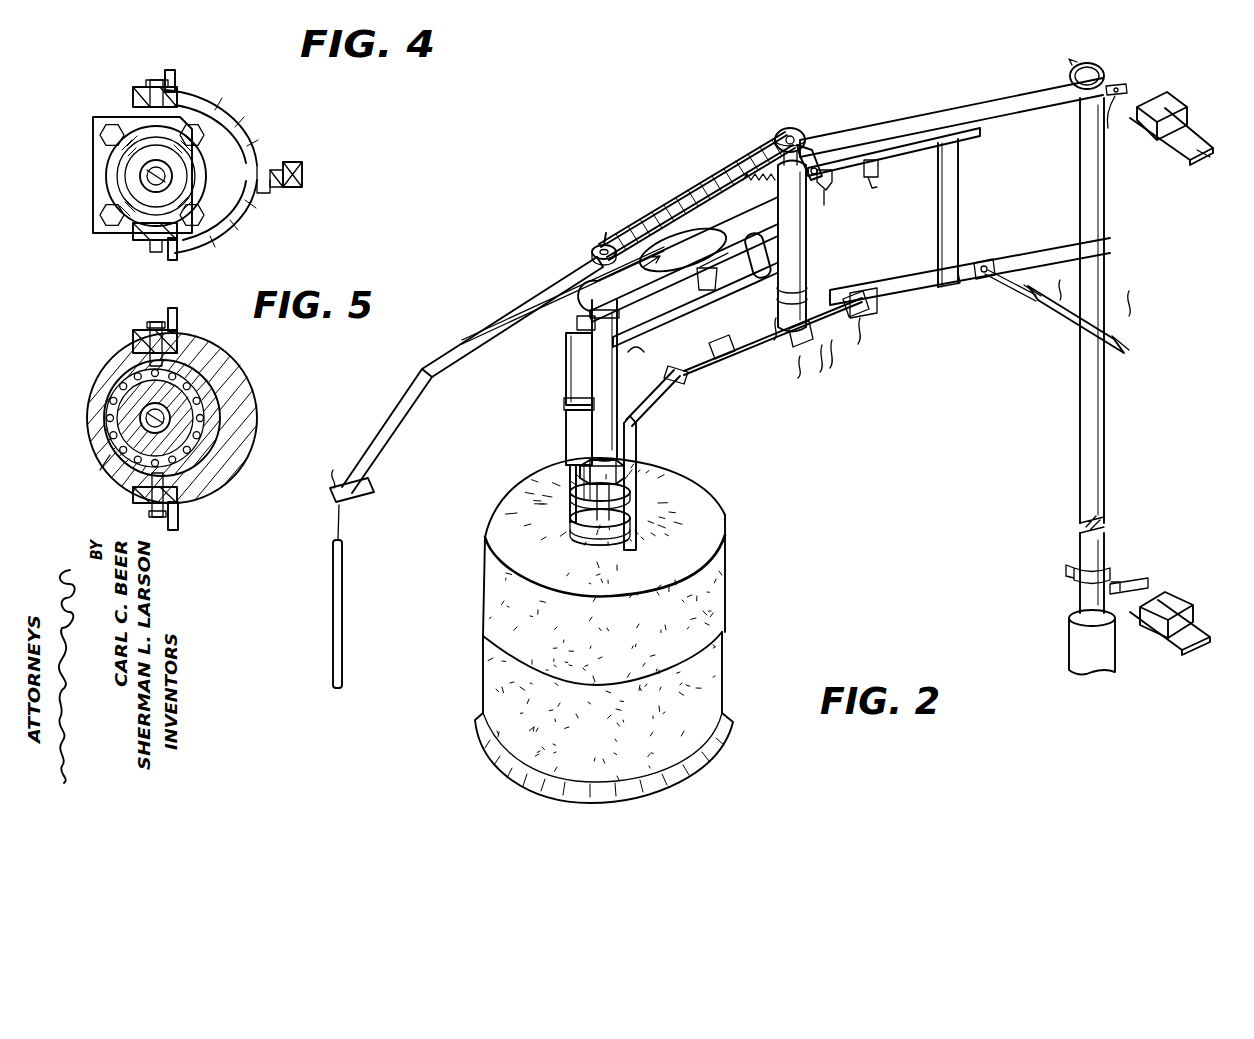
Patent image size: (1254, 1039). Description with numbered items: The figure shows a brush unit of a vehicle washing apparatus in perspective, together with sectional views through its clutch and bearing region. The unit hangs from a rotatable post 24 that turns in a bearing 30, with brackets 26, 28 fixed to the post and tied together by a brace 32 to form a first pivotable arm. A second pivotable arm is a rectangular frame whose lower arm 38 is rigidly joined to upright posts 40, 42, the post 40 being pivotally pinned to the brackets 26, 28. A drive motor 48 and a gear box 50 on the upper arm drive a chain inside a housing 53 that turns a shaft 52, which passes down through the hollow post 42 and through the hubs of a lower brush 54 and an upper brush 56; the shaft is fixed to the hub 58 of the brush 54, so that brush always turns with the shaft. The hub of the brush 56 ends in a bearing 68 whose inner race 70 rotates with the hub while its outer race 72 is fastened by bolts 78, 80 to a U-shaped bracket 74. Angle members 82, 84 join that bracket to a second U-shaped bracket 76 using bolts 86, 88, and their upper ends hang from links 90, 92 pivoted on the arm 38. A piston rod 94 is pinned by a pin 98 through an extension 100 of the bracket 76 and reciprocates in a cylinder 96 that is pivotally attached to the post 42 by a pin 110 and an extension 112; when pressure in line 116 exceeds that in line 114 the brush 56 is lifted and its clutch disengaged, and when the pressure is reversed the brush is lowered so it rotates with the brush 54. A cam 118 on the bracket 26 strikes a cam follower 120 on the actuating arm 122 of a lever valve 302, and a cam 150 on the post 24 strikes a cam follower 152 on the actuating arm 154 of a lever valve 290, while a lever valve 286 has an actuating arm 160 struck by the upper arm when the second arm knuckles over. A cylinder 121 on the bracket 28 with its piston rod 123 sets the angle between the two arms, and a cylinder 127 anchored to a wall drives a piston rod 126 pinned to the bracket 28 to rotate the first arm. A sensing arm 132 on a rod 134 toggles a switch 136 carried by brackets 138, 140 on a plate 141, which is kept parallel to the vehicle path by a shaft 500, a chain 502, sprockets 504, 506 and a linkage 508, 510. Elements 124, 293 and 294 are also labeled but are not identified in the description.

In FIG. 2, the rotatable post 24 is at (1106, 451).
In FIG. 2, the bracket 26 is at (938, 116).
In FIG. 2, the bracket 28 is at (918, 301).
In FIG. 2, the bearing 30 is at (1071, 634).
In FIG. 2, the brace 32 is at (958, 220).
In FIG. 2, the arm 38 is at (680, 372).
In FIG. 2, the upright post 40 is at (808, 242).
In FIG. 4, the upright post 42 is at (128, 182).
In FIG. 2, the upright post 42 is at (640, 325).
In FIG. 2, the drive motor 48 is at (750, 241).
In FIG. 2, the gear box 50 is at (706, 288).
In FIG. 4, the shaft 52 is at (142, 172).
In FIG. 5, the shaft 52 is at (139, 421).
In FIG. 2, the shaft 52 is at (622, 470).
In FIG. 2, the housing 53 is at (705, 240).
In FIG. 2, the brush 54 is at (716, 666).
In FIG. 2, the brush 56 is at (716, 594).
In FIG. 2, the hub 58 is at (770, 184).
In FIG. 5, the bearing 68 is at (100, 470).
In FIG. 2, the bearing 68 is at (620, 522).
In FIG. 5, the inner race 70 is at (126, 400).
In FIG. 5, the outer race 72 is at (186, 362).
In FIG. 5, the U-shaped bracket 74 is at (256, 426).
In FIG. 4, the U-shaped bracket 76 is at (244, 140).
In FIG. 5, the bolt 78 is at (149, 328).
In FIG. 5, the bolt 80 is at (150, 503).
In FIG. 4, the angle member 82 is at (178, 262).
In FIG. 5, the angle member 82 is at (178, 525).
In FIG. 2, the angle member 82 is at (632, 494).
In FIG. 4, the angle member 84 is at (186, 63).
In FIG. 5, the angle member 84 is at (175, 316).
In FIG. 2, the angle member 84 is at (566, 430).
In FIG. 4, the bolt 86 is at (156, 76).
In FIG. 4, the bolt 88 is at (150, 252).
In FIG. 2, the link 90 is at (648, 410).
In FIG. 2, the link 92 is at (640, 343).
In FIG. 4, the piston rod 94 is at (300, 182).
In FIG. 2, the piston rod 94 is at (570, 440).
In FIG. 2, the cylinder 96 is at (568, 355).
In FIG. 4, the pin 98 is at (292, 164).
In FIG. 4, the extension 100 is at (264, 194).
In FIG. 2, the pin 110 is at (578, 325).
In FIG. 2, the extension 112 is at (600, 316).
In FIG. 2, the line 114 is at (578, 325).
In FIG. 2, the line 116 is at (566, 404).
In FIG. 2, the cam 118 is at (1091, 65).
In FIG. 2, the cam follower 120 is at (1110, 88).
In FIG. 2, the cylinder 121 is at (835, 372).
In FIG. 2, the actuating arm 122 is at (1108, 130).
In FIG. 2, the piston rod 123 is at (740, 360).
In FIG. 2, the control box 124 is at (1170, 100).
In FIG. 2, the piston rod 126 is at (1014, 290).
In FIG. 2, the cylinder 127 is at (1120, 320).
In FIG. 2, the sensing arm 132 is at (345, 616).
In FIG. 2, the rod 134 is at (342, 530).
In FIG. 2, the switch 136 is at (360, 498).
In FIG. 2, the bracket 138 is at (392, 413).
In FIG. 2, the bracket 140 is at (398, 394).
In FIG. 2, the plate 141 is at (645, 268).
In FIG. 2, the cam 150 is at (1068, 570).
In FIG. 2, the cam follower 152 is at (1126, 583).
In FIG. 2, the actuating arm 154 is at (1170, 598).
In FIG. 2, the actuating arm 160 is at (830, 186).
In FIG. 2, the lever valve 286 is at (825, 204).
In FIG. 2, the lever valve 290 is at (1196, 618).
In FIG. 2, the pin 293 is at (877, 186).
In FIG. 2, the clamp 294 is at (880, 167).
In FIG. 2, the lever valve 302 is at (1197, 126).
In FIG. 2, the shaft 500 is at (596, 250).
In FIG. 2, the chain 502 is at (702, 176).
In FIG. 2, the sprocket 504 is at (605, 232).
In FIG. 2, the sprocket 506 is at (789, 126).
In FIG. 2, the linkage 508 is at (806, 150).
In FIG. 2, the link 510 is at (965, 140).